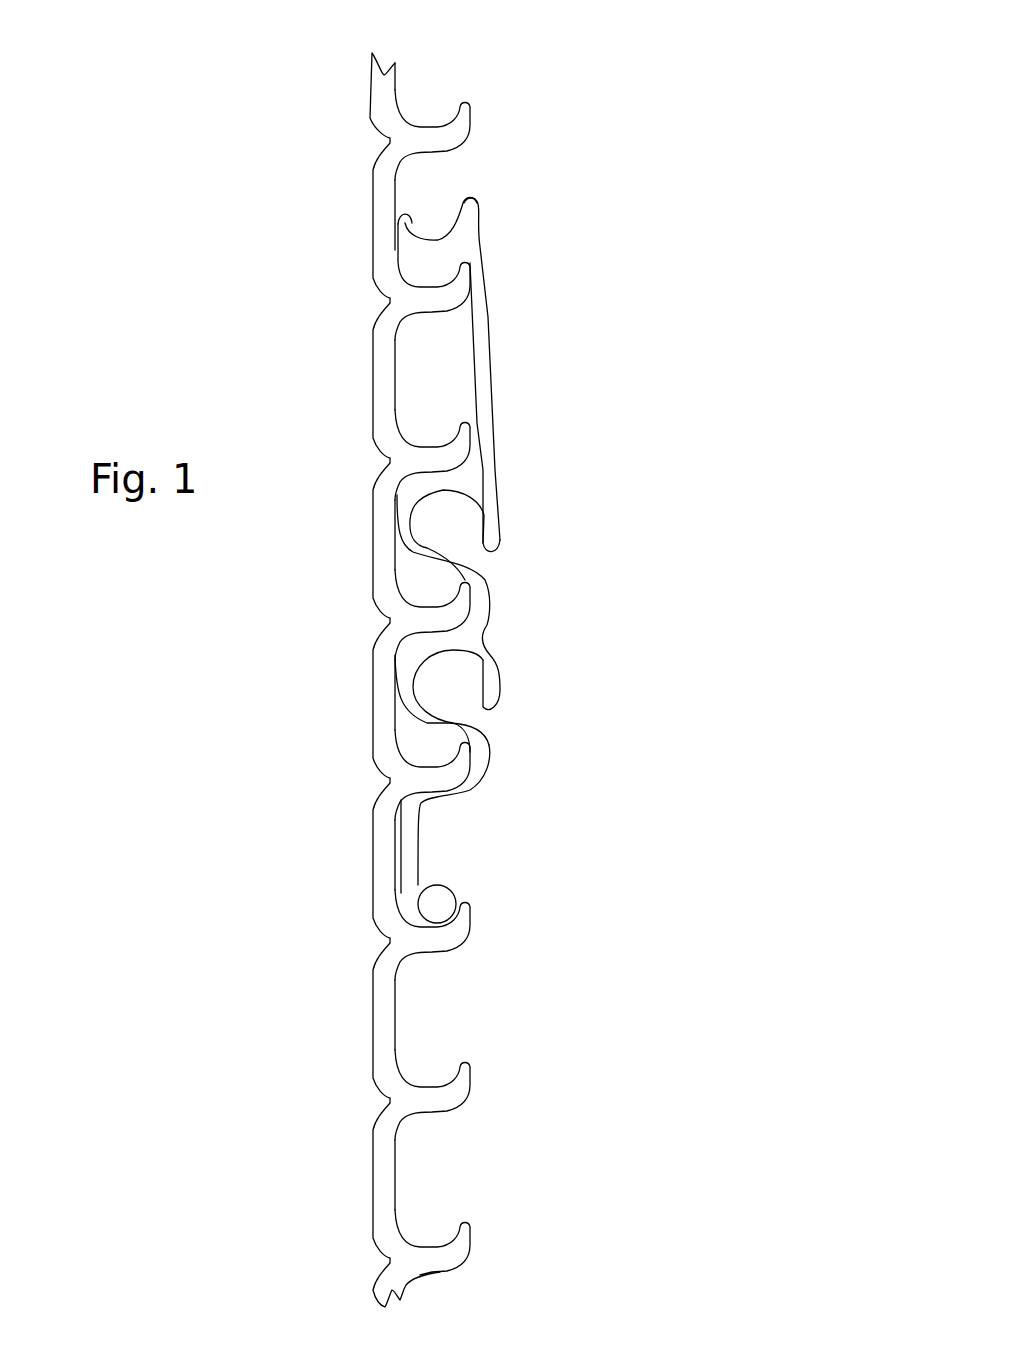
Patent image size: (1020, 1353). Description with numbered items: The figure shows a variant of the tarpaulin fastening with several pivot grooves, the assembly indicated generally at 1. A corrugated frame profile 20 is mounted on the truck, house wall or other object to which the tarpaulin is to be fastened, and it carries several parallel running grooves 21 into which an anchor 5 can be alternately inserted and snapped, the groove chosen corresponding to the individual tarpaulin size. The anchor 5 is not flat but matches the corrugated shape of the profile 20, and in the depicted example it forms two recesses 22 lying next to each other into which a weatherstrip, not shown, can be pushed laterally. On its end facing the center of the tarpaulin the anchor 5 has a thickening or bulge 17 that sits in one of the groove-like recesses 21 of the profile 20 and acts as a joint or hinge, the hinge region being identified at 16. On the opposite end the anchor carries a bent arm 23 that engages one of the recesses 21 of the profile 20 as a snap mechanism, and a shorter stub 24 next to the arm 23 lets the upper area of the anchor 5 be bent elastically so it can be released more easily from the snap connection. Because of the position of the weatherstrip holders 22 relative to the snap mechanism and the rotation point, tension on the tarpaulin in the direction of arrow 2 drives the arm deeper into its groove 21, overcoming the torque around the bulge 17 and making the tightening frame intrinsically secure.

The fastening assembly 1 is at (393, 680).
The arrow 2 is at (500, 1098).
The anchor 5 is at (501, 312).
The hook 16 is at (445, 935).
The bulge 17 is at (440, 893).
The frame profile 20 is at (386, 1007).
The groove 21 is at (428, 114).
The recess 22 is at (450, 520).
The bent arm 23 is at (401, 217).
The stub 24 is at (470, 207).